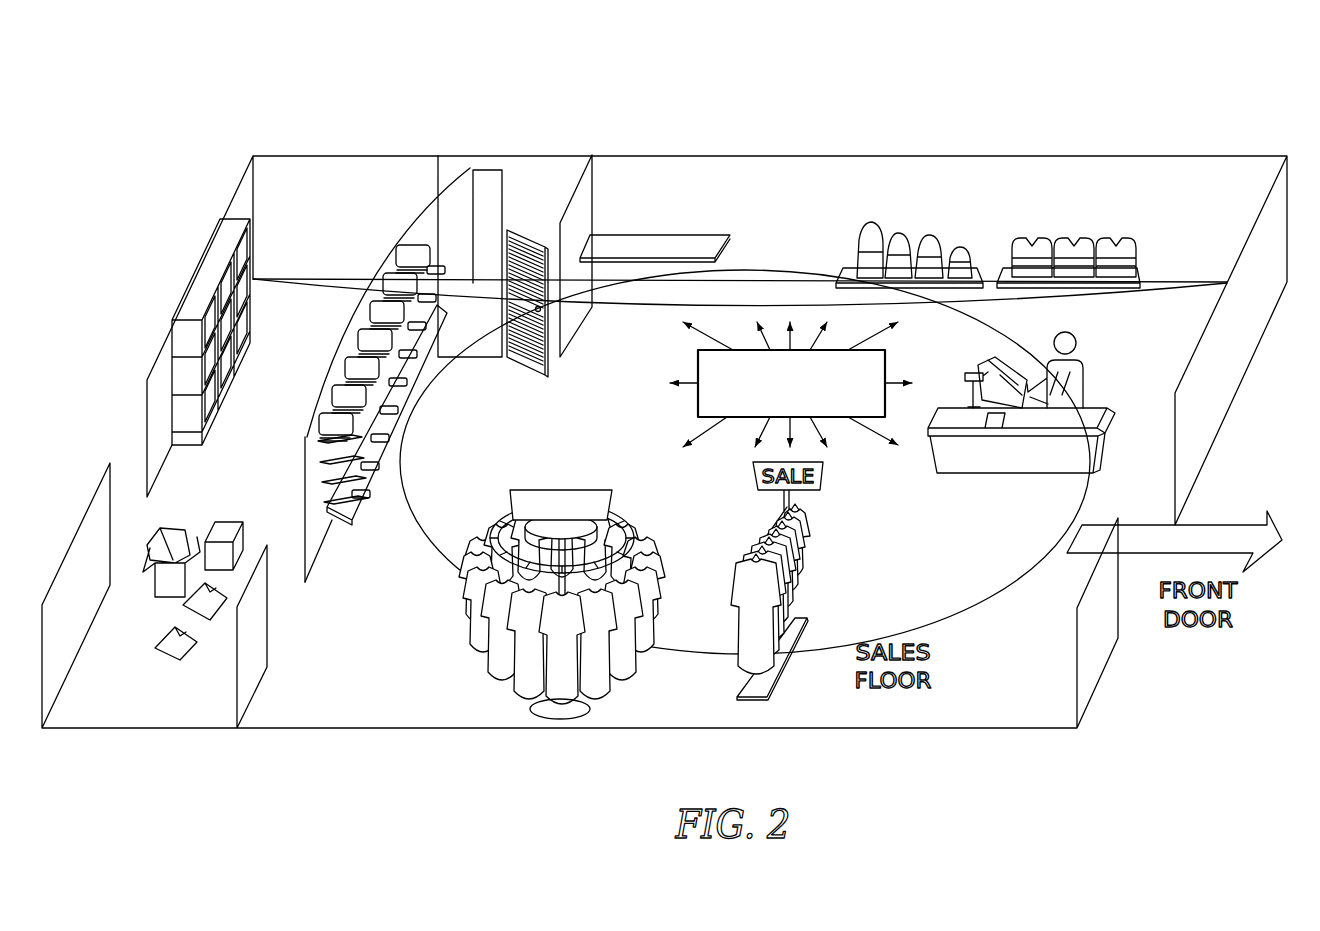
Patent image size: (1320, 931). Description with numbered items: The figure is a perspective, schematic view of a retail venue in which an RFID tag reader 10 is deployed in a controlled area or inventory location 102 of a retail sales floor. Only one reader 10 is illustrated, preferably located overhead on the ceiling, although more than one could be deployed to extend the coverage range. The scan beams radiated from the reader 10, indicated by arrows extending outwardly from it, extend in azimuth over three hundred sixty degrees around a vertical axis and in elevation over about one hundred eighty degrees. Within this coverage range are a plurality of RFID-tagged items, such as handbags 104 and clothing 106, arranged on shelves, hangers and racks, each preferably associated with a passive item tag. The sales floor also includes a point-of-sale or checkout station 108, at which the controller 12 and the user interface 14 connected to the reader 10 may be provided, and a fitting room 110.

The RFID tag reader 10 is at (737, 428).
The server or controller 12 is at (1005, 362).
The user interface 14 is at (984, 362).
The controlled area or inventory location 102 is at (961, 728).
The handbags 104 is at (975, 211).
The clothing 106 is at (481, 705).
The point-of-sale or checkout station 108 is at (1115, 391).
The fitting room 110 is at (542, 176).